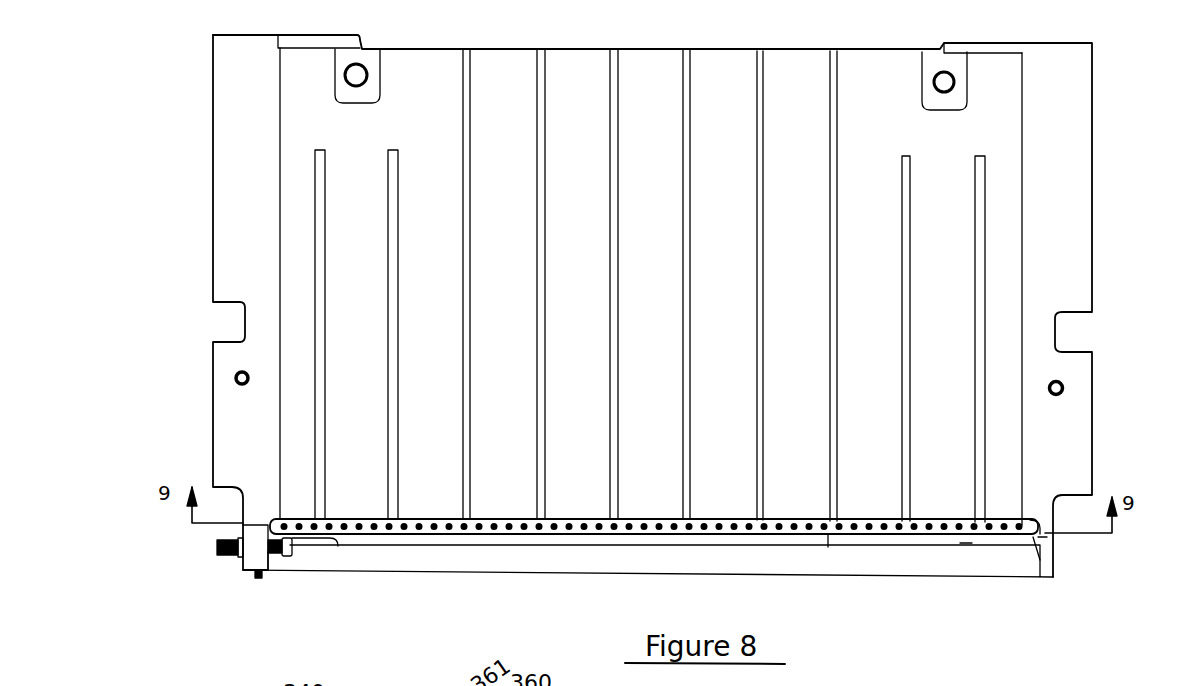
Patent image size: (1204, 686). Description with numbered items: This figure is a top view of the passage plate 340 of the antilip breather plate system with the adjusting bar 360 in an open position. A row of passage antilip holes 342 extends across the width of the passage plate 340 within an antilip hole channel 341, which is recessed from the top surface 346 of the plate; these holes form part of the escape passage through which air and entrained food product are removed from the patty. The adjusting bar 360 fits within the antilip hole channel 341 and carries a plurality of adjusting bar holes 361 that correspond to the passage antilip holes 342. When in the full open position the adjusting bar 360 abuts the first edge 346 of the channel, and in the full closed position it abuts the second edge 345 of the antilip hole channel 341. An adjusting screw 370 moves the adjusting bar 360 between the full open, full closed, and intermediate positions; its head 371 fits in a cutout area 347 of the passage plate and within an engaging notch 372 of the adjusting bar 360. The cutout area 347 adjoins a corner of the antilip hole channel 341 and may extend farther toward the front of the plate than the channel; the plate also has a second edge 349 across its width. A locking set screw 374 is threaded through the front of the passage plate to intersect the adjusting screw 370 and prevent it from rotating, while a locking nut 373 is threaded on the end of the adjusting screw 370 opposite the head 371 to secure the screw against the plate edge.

The passage plate 340 is at (1110, 412).
The antilip hole channel 341 is at (1040, 560).
The passage antilip holes 342 is at (650, 577).
The second edge of the antilip hole channel 345 is at (1059, 539).
The top surface of the passage plate 346 is at (273, 519).
The cutout area 347 is at (337, 547).
The second edge of the passage plate 349 is at (243, 530).
The adjusting bar 360 is at (972, 548).
The adjusting bar holes 361 is at (828, 547).
The adjusting screw 370 is at (276, 556).
The head of the adjusting screw 371 is at (302, 558).
The engaging notch 372 is at (344, 519).
The locking nut 373 is at (237, 556).
The locking set screw 374 is at (256, 576).